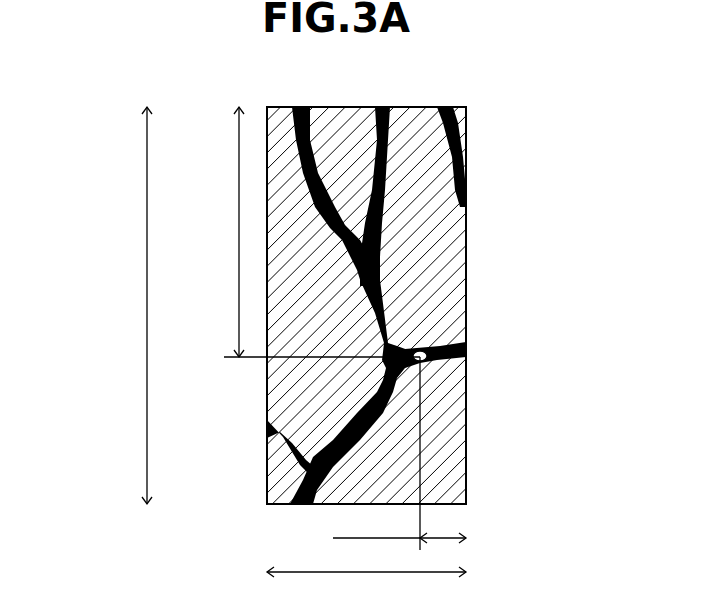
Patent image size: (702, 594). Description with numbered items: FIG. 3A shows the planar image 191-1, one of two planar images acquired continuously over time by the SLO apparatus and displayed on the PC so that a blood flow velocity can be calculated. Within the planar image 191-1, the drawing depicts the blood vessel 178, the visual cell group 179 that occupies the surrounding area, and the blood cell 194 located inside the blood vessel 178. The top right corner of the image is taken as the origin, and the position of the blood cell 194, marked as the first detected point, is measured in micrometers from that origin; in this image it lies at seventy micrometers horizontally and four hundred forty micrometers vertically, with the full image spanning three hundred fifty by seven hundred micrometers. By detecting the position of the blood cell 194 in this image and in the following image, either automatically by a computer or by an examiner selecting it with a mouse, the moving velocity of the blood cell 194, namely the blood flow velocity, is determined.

The planar image 191-1 is at (337, 80).
The blood vessel 178 is at (375, 270).
The blood cell 194 is at (426, 350).
The visual cell group 179 is at (462, 451).